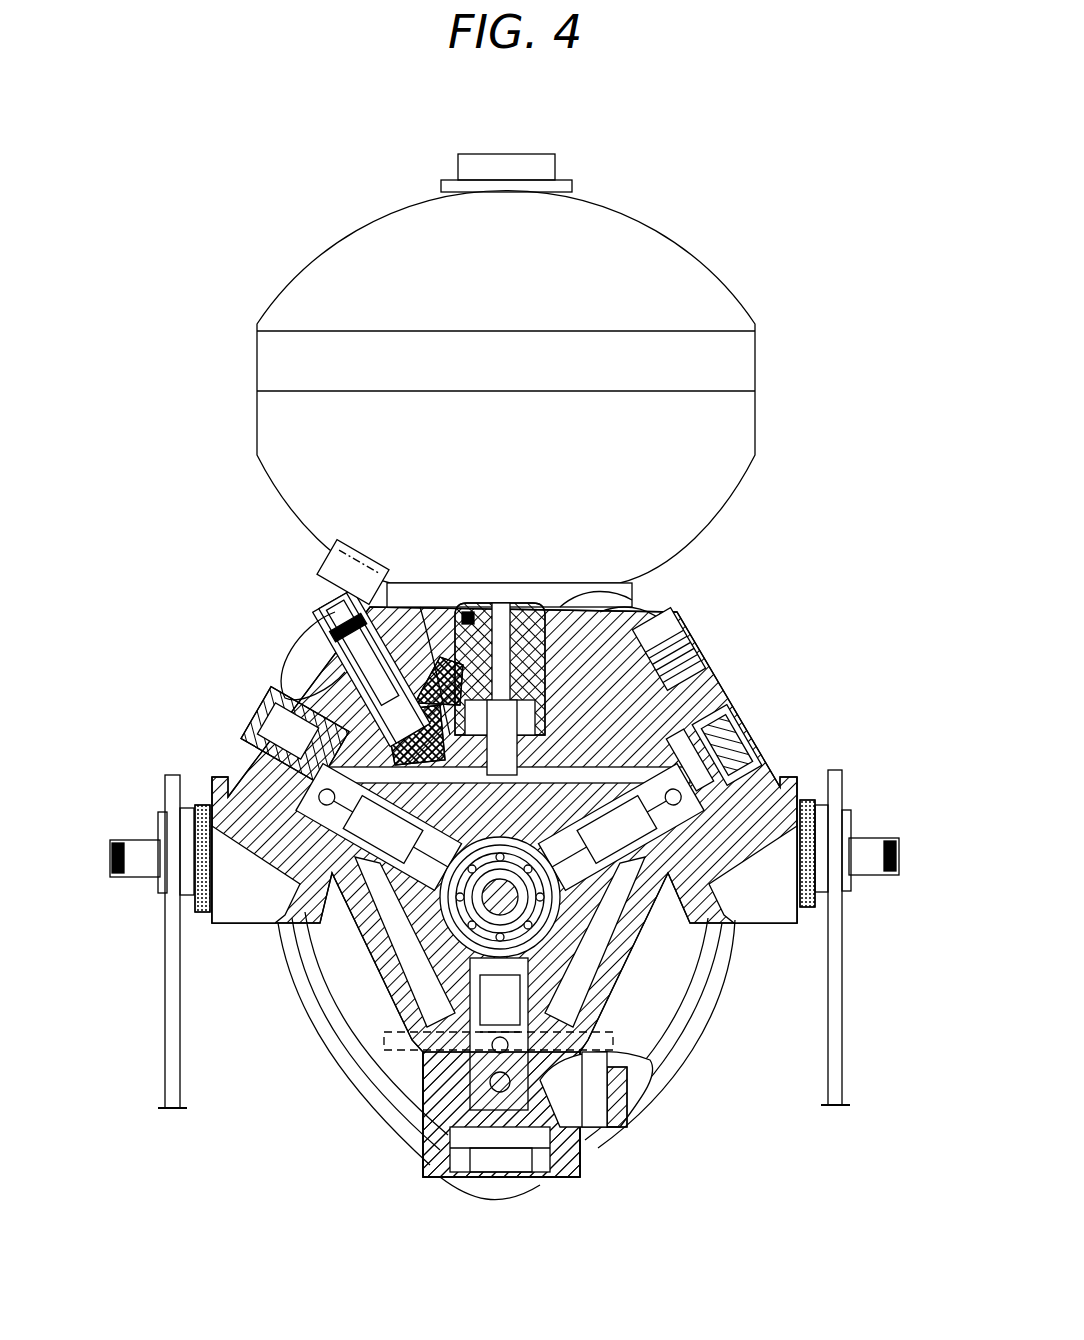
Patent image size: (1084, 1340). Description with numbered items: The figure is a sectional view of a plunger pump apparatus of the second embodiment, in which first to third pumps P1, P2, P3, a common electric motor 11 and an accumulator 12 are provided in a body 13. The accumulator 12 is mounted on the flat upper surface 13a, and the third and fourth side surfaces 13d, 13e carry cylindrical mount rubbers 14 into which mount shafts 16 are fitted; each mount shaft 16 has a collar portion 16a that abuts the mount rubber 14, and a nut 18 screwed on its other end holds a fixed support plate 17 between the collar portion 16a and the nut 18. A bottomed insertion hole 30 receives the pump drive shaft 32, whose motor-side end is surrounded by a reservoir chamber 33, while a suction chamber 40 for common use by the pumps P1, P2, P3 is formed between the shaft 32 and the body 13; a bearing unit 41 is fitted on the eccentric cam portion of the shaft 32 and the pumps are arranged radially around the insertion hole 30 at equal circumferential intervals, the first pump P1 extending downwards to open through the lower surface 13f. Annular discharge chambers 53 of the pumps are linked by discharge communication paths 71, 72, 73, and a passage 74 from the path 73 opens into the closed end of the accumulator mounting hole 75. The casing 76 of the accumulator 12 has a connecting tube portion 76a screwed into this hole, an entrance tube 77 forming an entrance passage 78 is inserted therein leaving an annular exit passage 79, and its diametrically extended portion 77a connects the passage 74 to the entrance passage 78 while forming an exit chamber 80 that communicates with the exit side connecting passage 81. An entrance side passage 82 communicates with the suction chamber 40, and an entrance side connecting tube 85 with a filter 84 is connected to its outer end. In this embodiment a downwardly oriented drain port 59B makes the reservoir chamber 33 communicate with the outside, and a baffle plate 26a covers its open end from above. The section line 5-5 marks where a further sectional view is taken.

The accumulator 12 is at (662, 254).
The casing 76 is at (722, 448).
The upper surface 13a is at (600, 615).
The entrance tube 77 is at (575, 605).
The exit chamber 80 is at (612, 620).
The accumulator mounting hole 75 is at (458, 622).
The entrance passage 78 is at (513, 605).
The exit passage 79 is at (468, 612).
The connecting tube portion 76a is at (420, 607).
The entrance side connecting tube 85 is at (318, 590).
The entrance side passage 82 is at (340, 620).
The diametrically extended portion 77a is at (335, 660).
The filter 84 is at (318, 692).
The exit side connecting passage 81 is at (700, 665).
The passage 74 is at (722, 692).
The discharge communication path 73 is at (730, 712).
The bearing unit 41 is at (513, 842).
The insertion hole 30 is at (562, 915).
The annular discharge chamber 53 is at (308, 890).
The body 13 is at (372, 1000).
The pump drive shaft 32 is at (338, 960).
The discharge communication path 71 is at (719, 938).
The electric motor 11 is at (728, 978).
The drain port 59B is at (588, 1130).
The lower surface 13f is at (552, 1170).
The baffle plate 26a is at (628, 1067).
The reservoir chamber 33 is at (648, 1100).
The suction chamber 40 is at (578, 1030).
The discharge communication path 72 is at (422, 1048).
The first pump P1 is at (452, 1105).
The second pump P2 is at (224, 954).
The third pump P3 is at (764, 951).
The support plate 17 is at (172, 940).
The mount rubber 14 is at (204, 805).
The collar portion 16a is at (188, 830).
The nut 18 is at (142, 831).
The mount shaft 16 is at (115, 853).
The third side surface 13d is at (208, 922).
The fourth side surface 13e is at (815, 898).
The section line 5- 5 is at (500, 565).